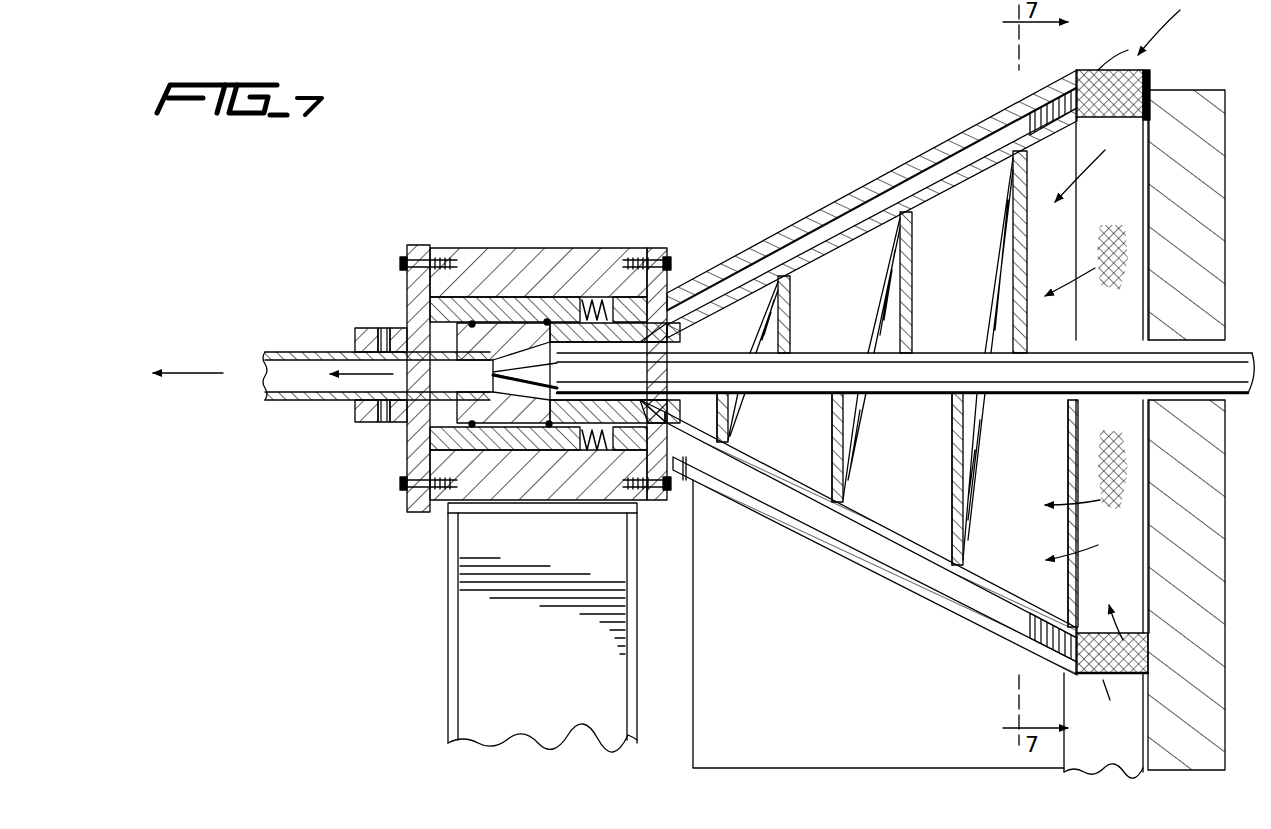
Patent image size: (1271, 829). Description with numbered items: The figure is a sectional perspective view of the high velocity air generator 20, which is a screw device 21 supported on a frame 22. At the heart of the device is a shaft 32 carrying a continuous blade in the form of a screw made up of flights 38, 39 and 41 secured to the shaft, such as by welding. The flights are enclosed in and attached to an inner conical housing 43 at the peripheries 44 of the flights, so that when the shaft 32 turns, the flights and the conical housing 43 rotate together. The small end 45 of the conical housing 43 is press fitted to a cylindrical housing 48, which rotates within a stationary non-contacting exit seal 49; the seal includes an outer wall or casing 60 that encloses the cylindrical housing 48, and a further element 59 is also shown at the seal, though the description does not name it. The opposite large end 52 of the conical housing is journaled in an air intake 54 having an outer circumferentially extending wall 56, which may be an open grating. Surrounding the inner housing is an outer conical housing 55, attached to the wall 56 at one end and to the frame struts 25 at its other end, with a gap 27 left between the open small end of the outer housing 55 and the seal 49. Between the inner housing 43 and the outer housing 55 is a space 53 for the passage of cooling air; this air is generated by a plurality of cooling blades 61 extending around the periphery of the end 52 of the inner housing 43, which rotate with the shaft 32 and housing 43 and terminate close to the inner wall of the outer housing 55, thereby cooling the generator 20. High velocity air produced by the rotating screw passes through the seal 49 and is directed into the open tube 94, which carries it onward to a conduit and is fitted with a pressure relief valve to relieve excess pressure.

The air generator 20 is at (808, 187).
The screw device 21 is at (1028, 278).
The frame 22 is at (930, 770).
The frame struts 25 is at (697, 635).
The gap 27 is at (688, 482).
The shaft 32 is at (948, 351).
The flight 38 is at (988, 422).
The flight 39 is at (862, 425).
The flight 41 is at (745, 412).
The inner conical housing 43 is at (855, 525).
The peripheries of the flights 44 is at (1026, 513).
The small end of the conical housing 45 is at (720, 290).
The cylindrical housing 48 is at (655, 408).
The exit seal 49 is at (517, 245).
The large end of the conical housing 52 is at (1052, 140).
The space 53 is at (875, 195).
The air intake 54 is at (1152, 85).
The outer conical housing 55 is at (949, 136).
The outer circumferentially extending wall 56 is at (1098, 70).
The end plate 59 is at (663, 250).
The casing 60 is at (590, 248).
The cooling blades 61 is at (1020, 620).
The open tube 94 is at (322, 400).